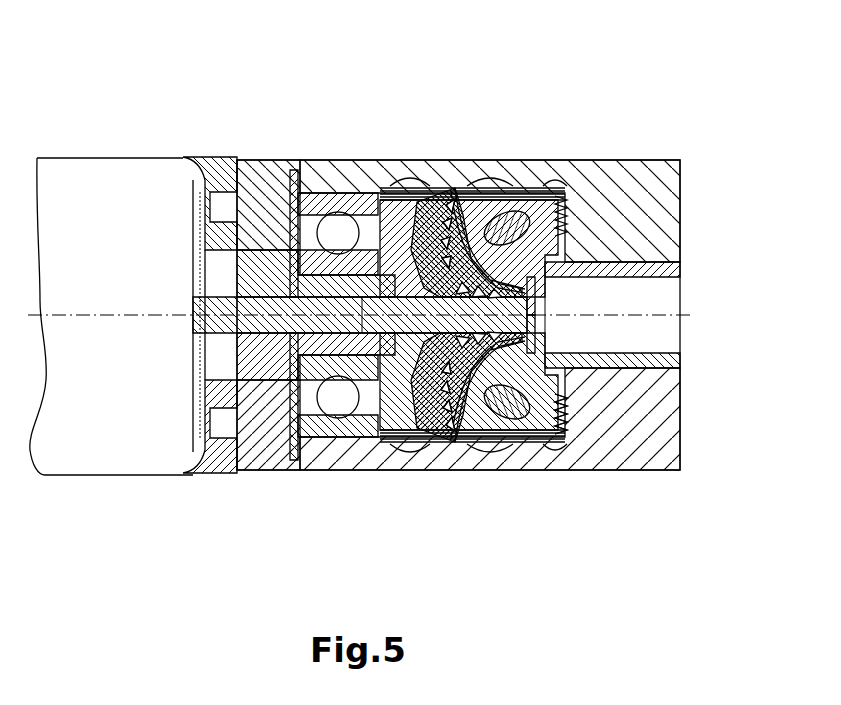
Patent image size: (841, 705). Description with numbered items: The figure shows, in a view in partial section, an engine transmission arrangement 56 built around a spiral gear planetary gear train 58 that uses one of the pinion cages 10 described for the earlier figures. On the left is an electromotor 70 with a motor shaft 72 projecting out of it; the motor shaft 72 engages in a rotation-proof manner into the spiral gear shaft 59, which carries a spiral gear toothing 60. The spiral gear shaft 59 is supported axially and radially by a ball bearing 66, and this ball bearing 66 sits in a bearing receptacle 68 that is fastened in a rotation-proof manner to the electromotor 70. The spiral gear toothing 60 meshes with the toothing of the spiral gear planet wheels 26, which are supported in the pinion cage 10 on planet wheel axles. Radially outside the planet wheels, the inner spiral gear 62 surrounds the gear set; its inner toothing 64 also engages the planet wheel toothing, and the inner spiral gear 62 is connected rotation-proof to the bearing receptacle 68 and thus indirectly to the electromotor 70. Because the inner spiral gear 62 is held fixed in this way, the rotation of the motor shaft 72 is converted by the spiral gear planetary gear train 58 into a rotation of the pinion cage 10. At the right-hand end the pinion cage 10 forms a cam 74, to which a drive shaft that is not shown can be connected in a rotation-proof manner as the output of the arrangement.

The engine transmission arrangement 56 is at (112, 78).
The electromotor 70 is at (113, 218).
The bearing receptacle 68 is at (272, 190).
The inner spiral gear 62 is at (615, 188).
The ball bearing 66 is at (320, 182).
The spiral gear shaft 59 is at (360, 277).
The spiral gear planetary gear train 58 is at (502, 140).
The cam 74 is at (657, 353).
The spiral gear toothing 60 is at (545, 310).
The motor shaft 72 is at (291, 315).
The pinion cage 10 is at (405, 215).
The spiral gear planet wheel 26 is at (500, 428).
The inner toothing 64 is at (553, 452).